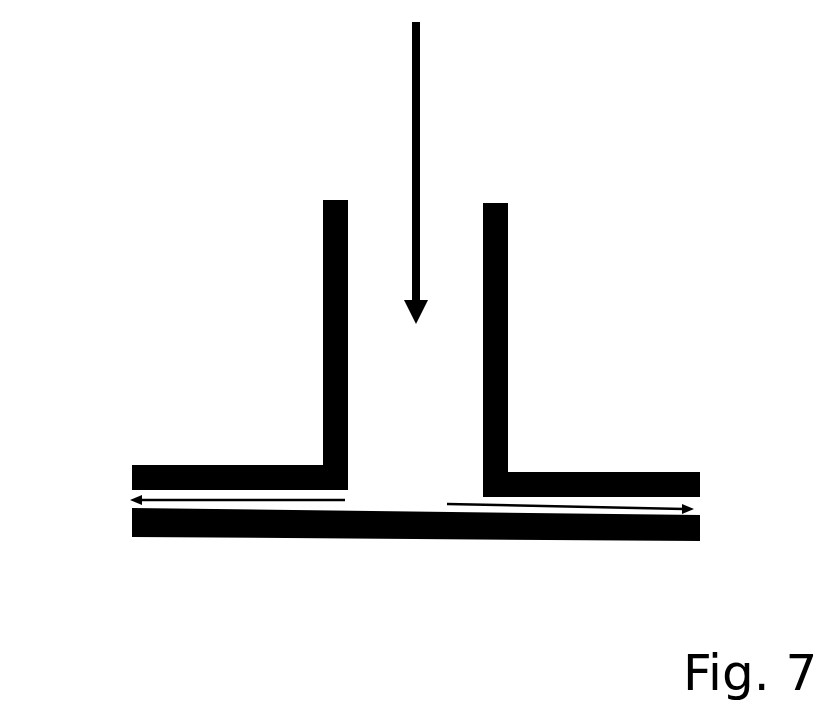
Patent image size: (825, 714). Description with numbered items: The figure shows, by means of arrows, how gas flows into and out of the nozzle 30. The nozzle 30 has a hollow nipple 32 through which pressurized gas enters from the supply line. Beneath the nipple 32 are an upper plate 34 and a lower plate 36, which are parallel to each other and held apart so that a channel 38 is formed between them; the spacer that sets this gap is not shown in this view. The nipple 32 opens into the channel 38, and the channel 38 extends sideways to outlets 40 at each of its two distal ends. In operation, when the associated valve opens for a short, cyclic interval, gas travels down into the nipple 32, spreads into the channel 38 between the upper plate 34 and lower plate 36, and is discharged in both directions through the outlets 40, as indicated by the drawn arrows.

The nozzle 30 is at (414, 362).
The nipple 32 is at (459, 348).
The upper plate 34 is at (416, 448).
The lower plate 36 is at (416, 561).
The channel 38 is at (479, 491).
The outlets 40 is at (423, 510).